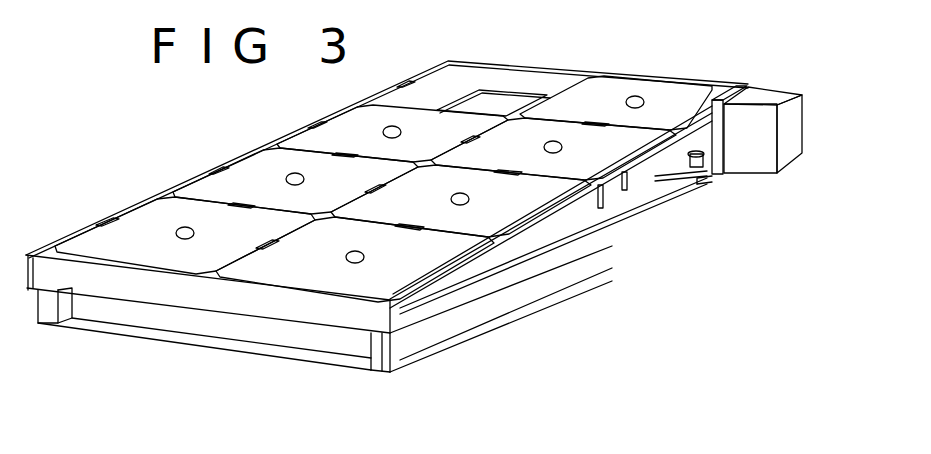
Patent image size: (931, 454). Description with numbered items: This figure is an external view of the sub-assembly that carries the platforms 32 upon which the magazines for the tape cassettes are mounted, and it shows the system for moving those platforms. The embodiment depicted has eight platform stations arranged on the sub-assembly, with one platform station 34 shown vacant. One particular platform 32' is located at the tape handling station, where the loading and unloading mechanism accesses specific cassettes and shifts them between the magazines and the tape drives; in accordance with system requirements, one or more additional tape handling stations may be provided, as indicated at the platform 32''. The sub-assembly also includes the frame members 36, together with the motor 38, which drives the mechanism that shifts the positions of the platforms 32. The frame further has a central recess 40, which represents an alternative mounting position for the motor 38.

The platforms 32 is at (424, 174).
The platform 32' is at (379, 285).
The platform 32'' is at (185, 218).
The platform station 34 is at (488, 104).
The frame members 36 is at (548, 228).
The motor 38 is at (763, 143).
The central recess 40 is at (610, 187).